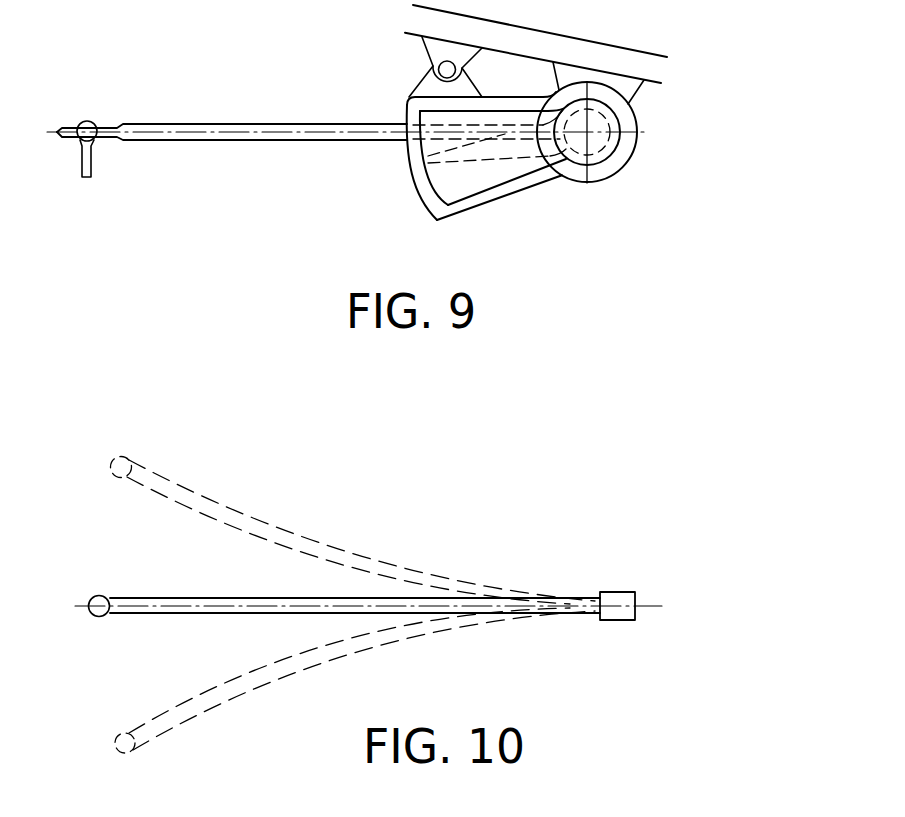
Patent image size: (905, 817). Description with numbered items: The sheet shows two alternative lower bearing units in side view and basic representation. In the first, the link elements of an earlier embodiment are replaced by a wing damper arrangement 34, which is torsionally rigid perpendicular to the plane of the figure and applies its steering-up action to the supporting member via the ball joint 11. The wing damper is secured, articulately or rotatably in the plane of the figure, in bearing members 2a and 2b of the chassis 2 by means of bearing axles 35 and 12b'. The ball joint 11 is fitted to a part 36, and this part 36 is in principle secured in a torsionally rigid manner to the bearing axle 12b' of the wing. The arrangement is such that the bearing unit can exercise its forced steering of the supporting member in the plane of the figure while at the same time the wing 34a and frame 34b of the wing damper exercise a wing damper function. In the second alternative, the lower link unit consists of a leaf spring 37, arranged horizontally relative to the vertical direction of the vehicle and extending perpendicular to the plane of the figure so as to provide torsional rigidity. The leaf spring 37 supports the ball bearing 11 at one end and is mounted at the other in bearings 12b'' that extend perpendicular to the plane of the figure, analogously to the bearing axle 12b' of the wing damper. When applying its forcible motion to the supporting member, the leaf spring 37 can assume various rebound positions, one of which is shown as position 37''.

In FIG. 9, the chassis 2 is at (560, 35).
In FIG. 9, the bearing member 2a is at (426, 50).
In FIG. 9, the bearing member 2b is at (642, 88).
In FIG. 9, the bearing axle 35 is at (455, 70).
In FIG. 9, the bearing axle 12b' is at (623, 144).
In FIG. 9, the wing damper arrangement 34 is at (403, 203).
In FIG. 9, the frame 34a is at (493, 198).
In FIG. 9, the frame 34b is at (450, 165).
In FIG. 9, the part 36 is at (257, 141).
In FIG. 9, the ball joint 11 is at (90, 122).
In FIG. 10, the ball joint 11 is at (98, 617).
In FIG. 10, the leaf spring 37 is at (368, 565).
In FIG. 10, the rebound position 37'' is at (355, 685).
In FIG. 10, the bearings 12b'' is at (635, 580).